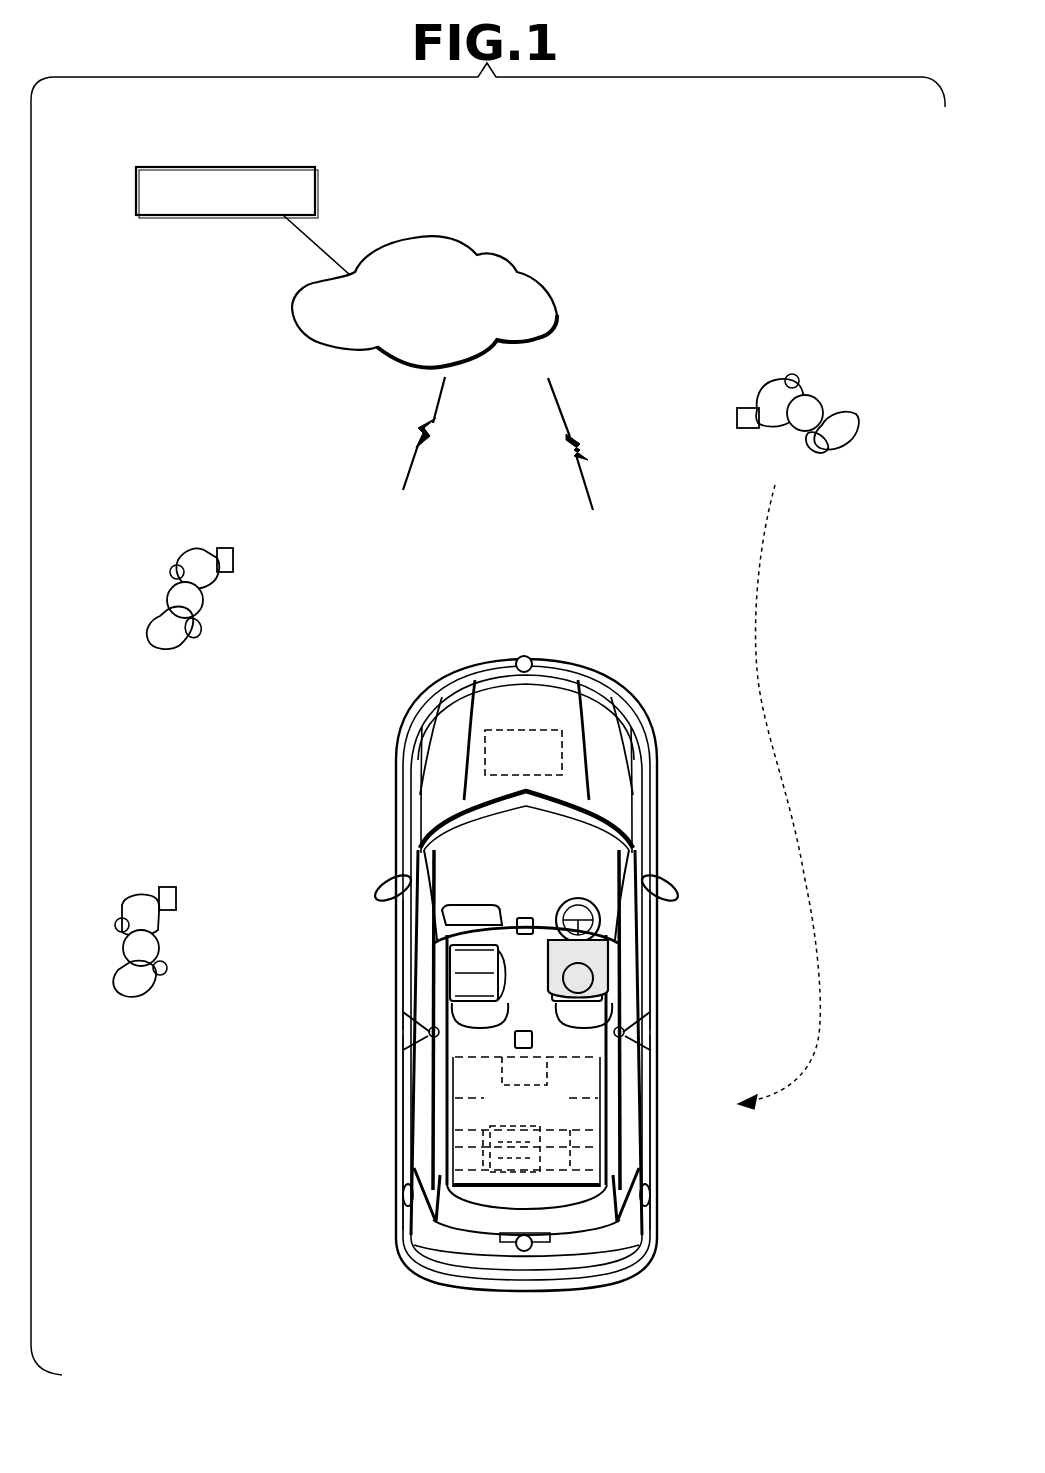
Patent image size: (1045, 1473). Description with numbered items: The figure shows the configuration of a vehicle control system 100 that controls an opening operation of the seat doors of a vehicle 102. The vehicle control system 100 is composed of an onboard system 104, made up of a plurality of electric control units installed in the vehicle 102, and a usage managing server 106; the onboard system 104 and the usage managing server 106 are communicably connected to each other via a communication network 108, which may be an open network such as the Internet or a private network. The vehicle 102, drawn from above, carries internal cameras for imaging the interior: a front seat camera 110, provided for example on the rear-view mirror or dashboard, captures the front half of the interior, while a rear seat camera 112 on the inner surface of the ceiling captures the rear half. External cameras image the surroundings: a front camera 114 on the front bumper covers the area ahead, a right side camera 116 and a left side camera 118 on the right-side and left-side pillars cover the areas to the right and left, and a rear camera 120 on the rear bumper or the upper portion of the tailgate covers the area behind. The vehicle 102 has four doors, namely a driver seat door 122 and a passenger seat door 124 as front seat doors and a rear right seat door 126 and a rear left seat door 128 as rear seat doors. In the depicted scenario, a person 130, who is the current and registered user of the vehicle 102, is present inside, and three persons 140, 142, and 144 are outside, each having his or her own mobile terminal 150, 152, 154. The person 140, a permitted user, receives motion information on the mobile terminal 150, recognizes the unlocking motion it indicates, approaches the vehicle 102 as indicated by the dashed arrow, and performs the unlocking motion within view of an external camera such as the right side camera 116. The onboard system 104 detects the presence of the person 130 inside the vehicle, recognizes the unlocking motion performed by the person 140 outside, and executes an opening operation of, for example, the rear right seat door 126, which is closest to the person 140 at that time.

The vehicle control system 100 is at (631, 140).
The vehicle 102 is at (405, 695).
The onboard system 104 is at (548, 733).
The usage managing server 106 is at (172, 171).
The communication network 108 is at (379, 268).
The front seat camera 110 is at (523, 918).
The rear seat camera 112 is at (527, 1074).
The front camera 114 is at (522, 658).
The right side camera 116 is at (650, 1036).
The left side camera 118 is at (400, 1033).
The rear camera 120 is at (500, 1291).
The driver seat door 122 is at (650, 958).
The passenger seat door 124 is at (395, 973).
The rear right seat door 126 is at (650, 1135).
The rear left seat door 128 is at (395, 1118).
The person 130 is at (563, 906).
The person 140 is at (840, 412).
The person 142 is at (185, 565).
The person 144 is at (140, 906).
The mobile terminal 150 is at (742, 408).
The mobile terminal 152 is at (232, 547).
The mobile terminal 154 is at (168, 887).